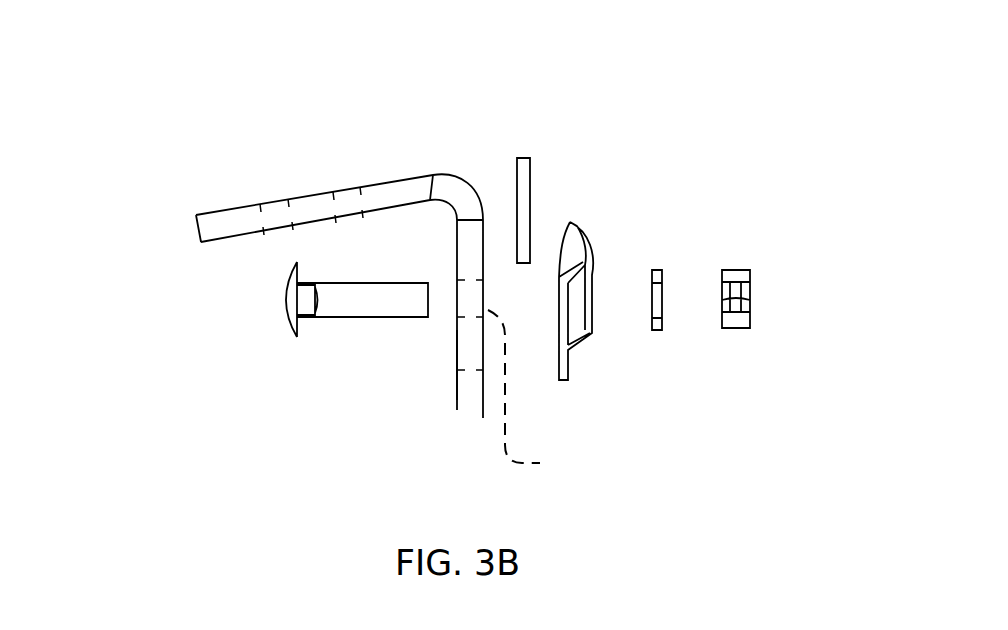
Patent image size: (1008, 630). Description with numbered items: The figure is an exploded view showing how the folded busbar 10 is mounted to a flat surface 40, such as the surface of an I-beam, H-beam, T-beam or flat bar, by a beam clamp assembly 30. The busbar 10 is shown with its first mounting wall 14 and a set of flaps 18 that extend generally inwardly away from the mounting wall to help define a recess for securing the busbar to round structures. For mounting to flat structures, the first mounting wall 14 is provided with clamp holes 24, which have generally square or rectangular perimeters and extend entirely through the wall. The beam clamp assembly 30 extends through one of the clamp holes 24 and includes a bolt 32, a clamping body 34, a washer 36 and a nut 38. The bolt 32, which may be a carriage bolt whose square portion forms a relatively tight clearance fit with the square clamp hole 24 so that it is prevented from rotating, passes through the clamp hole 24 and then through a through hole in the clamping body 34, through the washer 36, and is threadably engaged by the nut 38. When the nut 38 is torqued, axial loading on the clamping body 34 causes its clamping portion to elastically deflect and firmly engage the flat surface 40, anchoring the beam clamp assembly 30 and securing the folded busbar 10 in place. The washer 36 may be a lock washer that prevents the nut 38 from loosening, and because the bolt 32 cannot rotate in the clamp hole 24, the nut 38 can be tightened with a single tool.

The folded busbar 10 is at (215, 180).
The first mounting wall 14 is at (457, 352).
The flaps 18 is at (227, 240).
The clamp holes 24 is at (535, 399).
The beam clamp assembly 30 is at (603, 163).
The bolt 32 is at (330, 315).
The clamping body 34 is at (587, 337).
The washer 36 is at (655, 332).
The nut 38 is at (748, 328).
The flat surface 40 is at (540, 168).